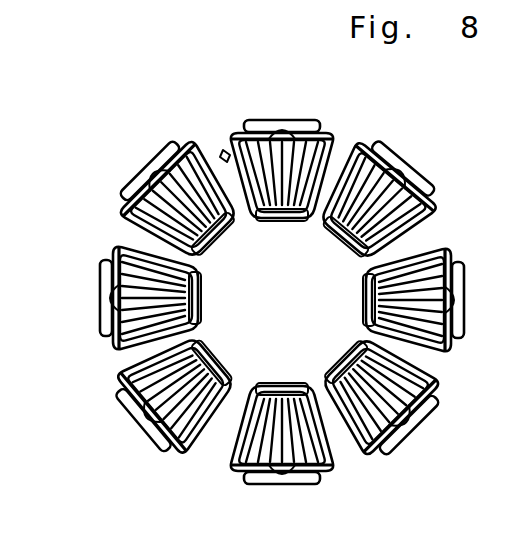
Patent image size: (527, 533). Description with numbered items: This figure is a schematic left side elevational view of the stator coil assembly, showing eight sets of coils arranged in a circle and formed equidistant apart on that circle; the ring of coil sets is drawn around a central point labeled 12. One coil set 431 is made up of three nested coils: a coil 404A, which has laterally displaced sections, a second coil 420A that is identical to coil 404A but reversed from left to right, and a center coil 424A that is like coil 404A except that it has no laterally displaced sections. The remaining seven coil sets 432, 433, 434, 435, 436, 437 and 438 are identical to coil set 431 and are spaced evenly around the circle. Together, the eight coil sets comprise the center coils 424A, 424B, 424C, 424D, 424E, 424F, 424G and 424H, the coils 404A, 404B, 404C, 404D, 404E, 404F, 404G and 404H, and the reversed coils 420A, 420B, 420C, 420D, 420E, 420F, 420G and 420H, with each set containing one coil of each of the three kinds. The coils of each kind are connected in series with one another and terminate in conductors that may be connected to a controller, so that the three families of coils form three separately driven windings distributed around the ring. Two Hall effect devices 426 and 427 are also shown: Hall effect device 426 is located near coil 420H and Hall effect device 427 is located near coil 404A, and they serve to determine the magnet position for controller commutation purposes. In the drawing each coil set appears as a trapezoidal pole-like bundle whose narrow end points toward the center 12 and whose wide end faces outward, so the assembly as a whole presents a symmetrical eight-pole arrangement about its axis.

The central axis 12 is at (274, 293).
The coil 404A is at (225, 135).
The coil 404B is at (374, 140).
The coil 404C is at (452, 256).
The coil 404D is at (418, 388).
The coil 404E is at (315, 455).
The coil 404F is at (227, 446).
The coil 404G is at (106, 340).
The coil 404H is at (125, 200).
The coil 420A is at (310, 116).
The coil 420B is at (428, 205).
The coil 420C is at (439, 332).
The coil 420D is at (363, 438).
The coil 420E is at (222, 473).
The coil 420F is at (126, 384).
The coil 420G is at (115, 250).
The coil 420H is at (188, 150).
The center coil 424A is at (258, 110).
The center coil 424B is at (400, 160).
The center coil 424C is at (466, 268).
The center coil 424D is at (405, 414).
The center coil 424E is at (274, 474).
The center coil 424F is at (140, 415).
The center coil 424G is at (98, 318).
The center coil 424H is at (132, 187).
The Hall effect device 426 is at (213, 143).
The Hall effect device 427 is at (240, 206).
The coil set 431 is at (266, 50).
The coil set 432 is at (485, 110).
The coil set 433 is at (345, 306).
The coil set 434 is at (447, 458).
The coil set 435 is at (277, 503).
The coil set 436 is at (108, 465).
The coil set 437 is at (196, 298).
The coil set 438 is at (83, 100).